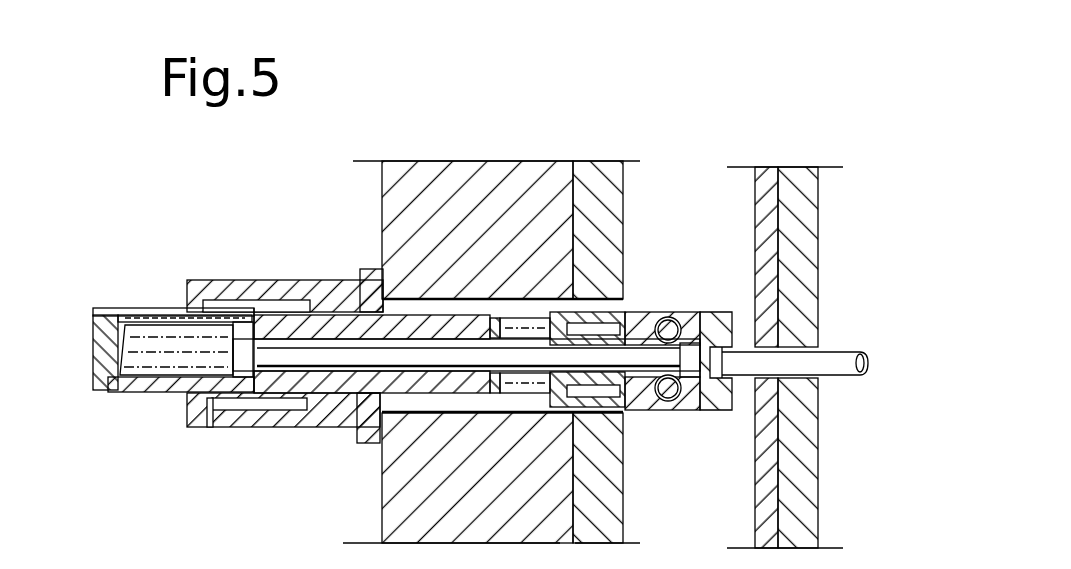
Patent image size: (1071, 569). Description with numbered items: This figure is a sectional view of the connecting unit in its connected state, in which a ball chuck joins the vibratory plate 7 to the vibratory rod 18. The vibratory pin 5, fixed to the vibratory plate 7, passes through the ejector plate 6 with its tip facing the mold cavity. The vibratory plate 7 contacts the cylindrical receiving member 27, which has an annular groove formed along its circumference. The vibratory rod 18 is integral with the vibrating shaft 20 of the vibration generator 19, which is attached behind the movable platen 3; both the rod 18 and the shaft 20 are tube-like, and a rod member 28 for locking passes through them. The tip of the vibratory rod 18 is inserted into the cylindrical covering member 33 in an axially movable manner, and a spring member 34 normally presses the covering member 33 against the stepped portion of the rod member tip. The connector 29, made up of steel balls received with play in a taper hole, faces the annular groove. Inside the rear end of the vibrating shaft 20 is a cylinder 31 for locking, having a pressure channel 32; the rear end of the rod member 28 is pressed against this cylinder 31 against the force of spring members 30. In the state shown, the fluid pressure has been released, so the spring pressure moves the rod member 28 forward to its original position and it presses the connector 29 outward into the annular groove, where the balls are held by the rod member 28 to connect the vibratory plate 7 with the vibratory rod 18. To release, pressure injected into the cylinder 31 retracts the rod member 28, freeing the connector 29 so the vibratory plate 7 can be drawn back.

The movable platen 3 is at (491, 173).
The vibratory pin 5 is at (835, 358).
The ejector plate 6 is at (807, 252).
The vibratory plate 7 is at (726, 310).
The vibratory rod 18 is at (507, 313).
The vibration generator 19 is at (258, 280).
The vibrating shaft 20 is at (279, 380).
The receiving member 27 is at (645, 312).
The rod member 28 is at (340, 348).
The connector 29 is at (674, 313).
The spring member 30 is at (140, 325).
The cylinder 31 is at (604, 195).
The pressure channel 32 is at (167, 310).
The covering member 33 is at (620, 410).
The spring member 34 is at (527, 312).